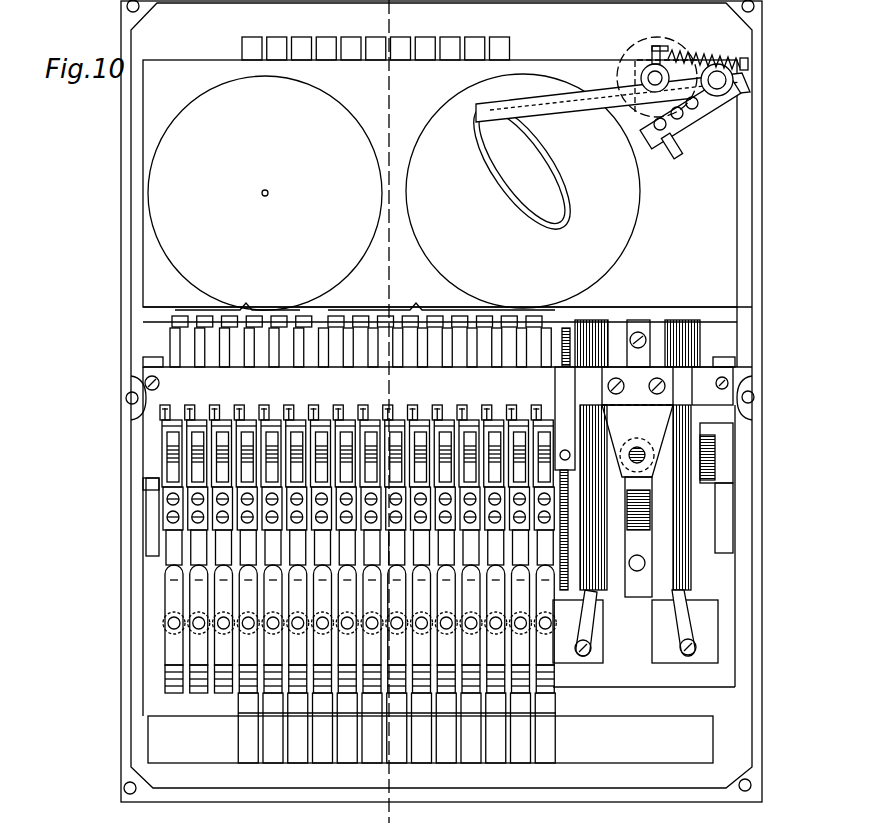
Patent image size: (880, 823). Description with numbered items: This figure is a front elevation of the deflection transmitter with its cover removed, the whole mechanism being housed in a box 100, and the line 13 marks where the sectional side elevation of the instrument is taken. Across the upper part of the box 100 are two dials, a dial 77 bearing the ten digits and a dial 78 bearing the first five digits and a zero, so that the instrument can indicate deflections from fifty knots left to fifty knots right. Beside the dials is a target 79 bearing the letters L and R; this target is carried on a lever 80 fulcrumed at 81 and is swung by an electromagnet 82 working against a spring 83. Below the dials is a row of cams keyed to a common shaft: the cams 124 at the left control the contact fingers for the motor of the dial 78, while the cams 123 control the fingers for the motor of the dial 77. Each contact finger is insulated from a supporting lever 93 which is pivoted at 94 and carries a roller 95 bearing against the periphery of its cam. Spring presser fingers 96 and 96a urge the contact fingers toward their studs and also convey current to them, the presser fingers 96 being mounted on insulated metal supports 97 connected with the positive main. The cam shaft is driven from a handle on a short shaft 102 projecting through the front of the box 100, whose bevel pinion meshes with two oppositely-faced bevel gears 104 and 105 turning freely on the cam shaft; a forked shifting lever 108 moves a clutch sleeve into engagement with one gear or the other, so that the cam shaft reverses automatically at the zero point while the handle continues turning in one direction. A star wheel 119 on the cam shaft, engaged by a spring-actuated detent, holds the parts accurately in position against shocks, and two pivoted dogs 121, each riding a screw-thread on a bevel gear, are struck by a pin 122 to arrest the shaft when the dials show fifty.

The section line 13 is at (388, 14).
The dial 77 is at (458, 108).
The dial 78 is at (350, 110).
The target 79 is at (552, 172).
The lever 80 is at (613, 97).
The fulcrum 81 is at (745, 90).
The electromagnet 82 is at (636, 48).
The spring 83 is at (700, 58).
The supporting lever 93 is at (162, 491).
The pivot 94 is at (163, 417).
The roller 95 is at (172, 460).
The spring presser finger 96 is at (175, 582).
The spring presser finger 96a is at (245, 593).
The insulated metal support 97 is at (165, 672).
The box 100 is at (757, 243).
The short shaft 102 is at (650, 434).
The bevel gear 104 is at (668, 322).
The bevel gear 105 is at (613, 320).
The forked shifting lever 108 is at (633, 540).
The star wheel 119 is at (565, 362).
The dog 121 is at (684, 613).
The pin 122 is at (600, 543).
The cams 123 is at (417, 304).
The cams 124 is at (242, 304).